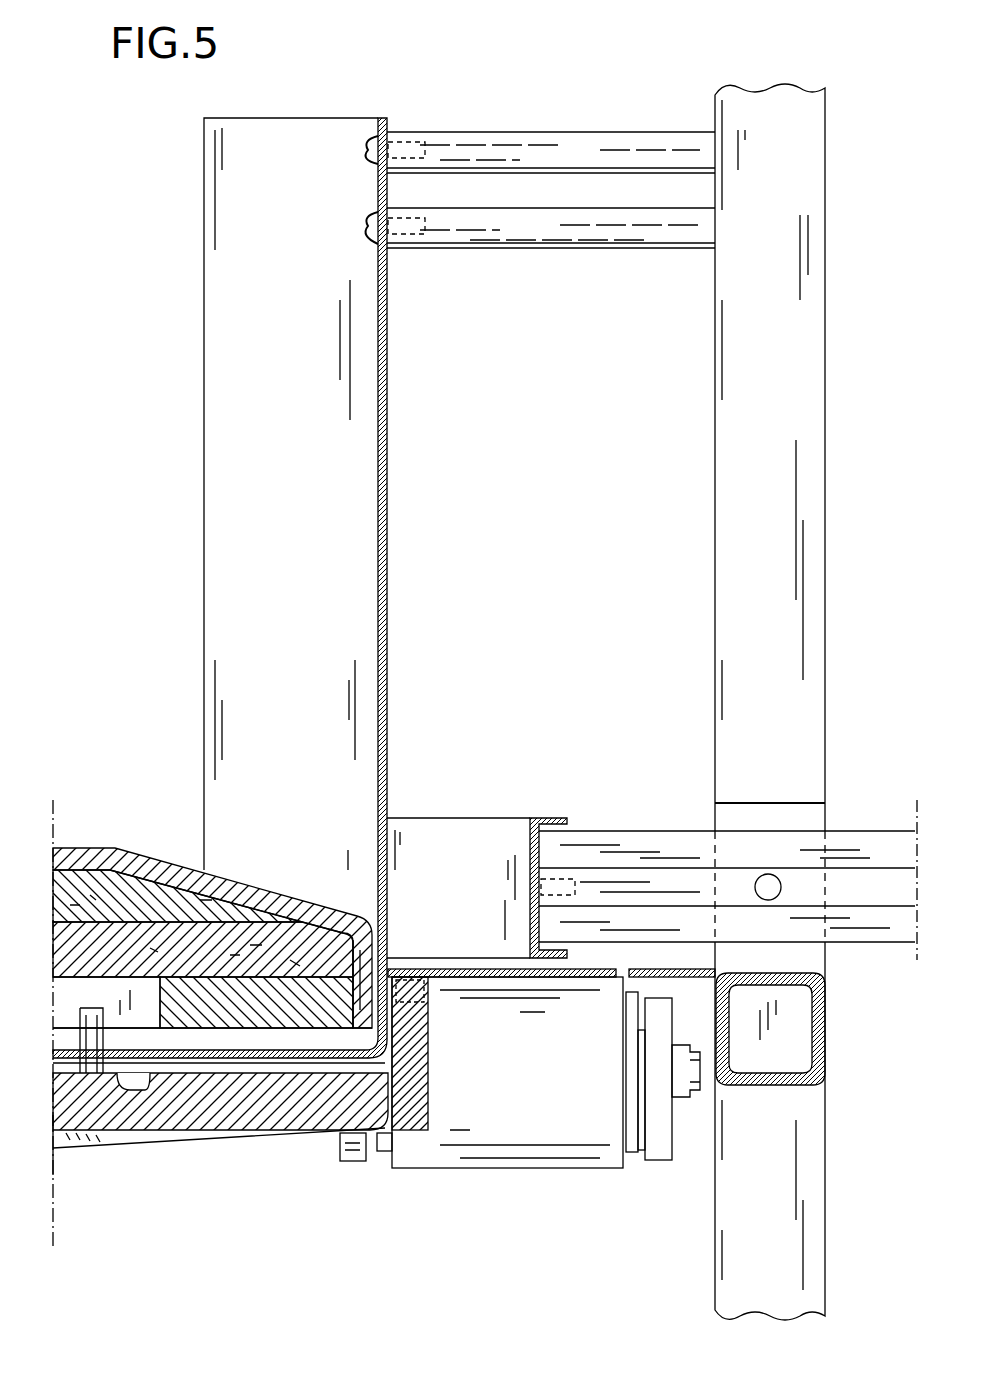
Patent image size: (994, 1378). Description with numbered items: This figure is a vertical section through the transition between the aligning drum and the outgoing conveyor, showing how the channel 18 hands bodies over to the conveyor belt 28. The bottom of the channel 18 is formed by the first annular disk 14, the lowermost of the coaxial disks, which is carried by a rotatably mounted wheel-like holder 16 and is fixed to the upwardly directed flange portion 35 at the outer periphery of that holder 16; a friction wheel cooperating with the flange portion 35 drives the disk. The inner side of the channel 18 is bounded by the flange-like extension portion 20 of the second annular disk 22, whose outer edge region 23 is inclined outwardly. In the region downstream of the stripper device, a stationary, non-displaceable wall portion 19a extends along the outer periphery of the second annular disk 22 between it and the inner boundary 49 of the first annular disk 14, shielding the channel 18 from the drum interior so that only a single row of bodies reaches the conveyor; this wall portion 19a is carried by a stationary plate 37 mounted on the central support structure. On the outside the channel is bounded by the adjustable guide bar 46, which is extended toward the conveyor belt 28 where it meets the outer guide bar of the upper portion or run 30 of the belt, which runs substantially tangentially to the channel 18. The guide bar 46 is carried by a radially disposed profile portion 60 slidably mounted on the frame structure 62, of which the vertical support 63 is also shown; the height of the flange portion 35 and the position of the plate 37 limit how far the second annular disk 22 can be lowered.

The first annular disk 14 is at (492, 968).
The holder 16 is at (327, 1115).
The channel 18 is at (452, 812).
The wall portion 19a is at (380, 636).
The flange-like extension portion 20 is at (368, 930).
The second annular disk 22 is at (85, 855).
The outer edge region 23 is at (307, 900).
The conveyor belt 28 is at (588, 1137).
The upper portion 30 is at (626, 968).
The flange portion 35 is at (413, 1057).
The stationary plate 37 is at (238, 1060).
The guide bar 46 is at (531, 830).
The inner boundary 49 is at (401, 975).
The profile portion 60 is at (858, 830).
The frame structure 62 is at (826, 1031).
The vertical support 63 is at (815, 470).